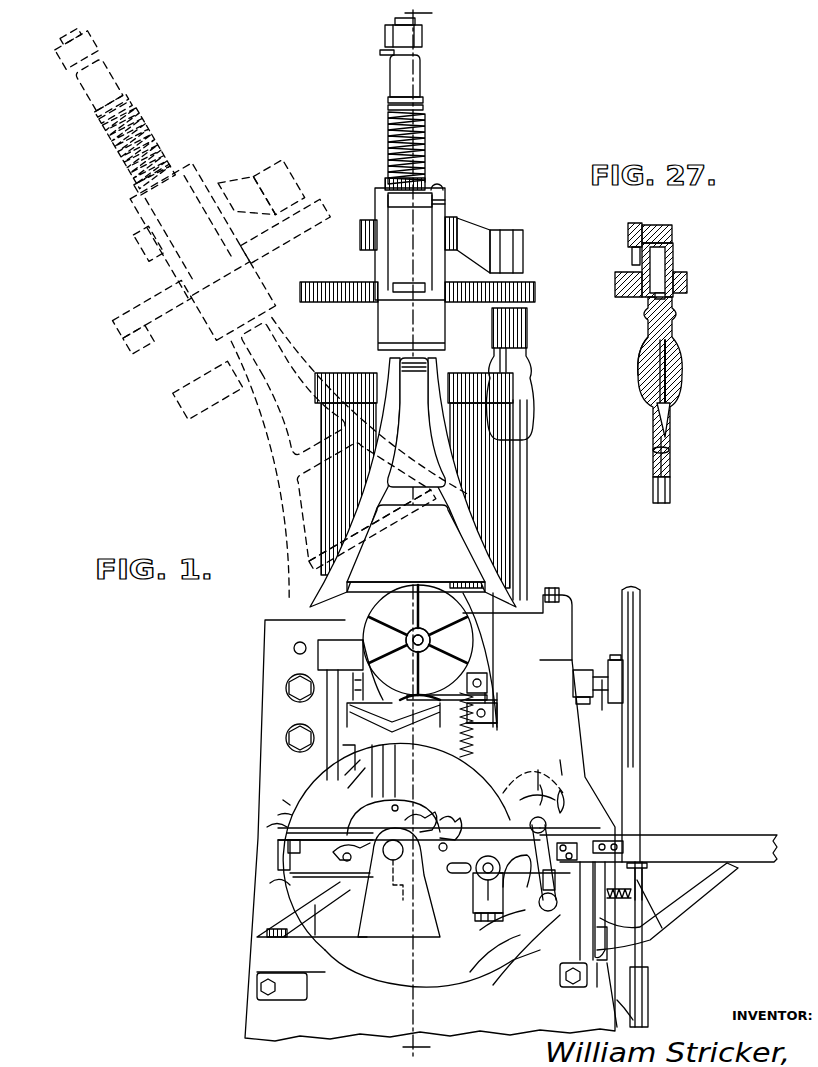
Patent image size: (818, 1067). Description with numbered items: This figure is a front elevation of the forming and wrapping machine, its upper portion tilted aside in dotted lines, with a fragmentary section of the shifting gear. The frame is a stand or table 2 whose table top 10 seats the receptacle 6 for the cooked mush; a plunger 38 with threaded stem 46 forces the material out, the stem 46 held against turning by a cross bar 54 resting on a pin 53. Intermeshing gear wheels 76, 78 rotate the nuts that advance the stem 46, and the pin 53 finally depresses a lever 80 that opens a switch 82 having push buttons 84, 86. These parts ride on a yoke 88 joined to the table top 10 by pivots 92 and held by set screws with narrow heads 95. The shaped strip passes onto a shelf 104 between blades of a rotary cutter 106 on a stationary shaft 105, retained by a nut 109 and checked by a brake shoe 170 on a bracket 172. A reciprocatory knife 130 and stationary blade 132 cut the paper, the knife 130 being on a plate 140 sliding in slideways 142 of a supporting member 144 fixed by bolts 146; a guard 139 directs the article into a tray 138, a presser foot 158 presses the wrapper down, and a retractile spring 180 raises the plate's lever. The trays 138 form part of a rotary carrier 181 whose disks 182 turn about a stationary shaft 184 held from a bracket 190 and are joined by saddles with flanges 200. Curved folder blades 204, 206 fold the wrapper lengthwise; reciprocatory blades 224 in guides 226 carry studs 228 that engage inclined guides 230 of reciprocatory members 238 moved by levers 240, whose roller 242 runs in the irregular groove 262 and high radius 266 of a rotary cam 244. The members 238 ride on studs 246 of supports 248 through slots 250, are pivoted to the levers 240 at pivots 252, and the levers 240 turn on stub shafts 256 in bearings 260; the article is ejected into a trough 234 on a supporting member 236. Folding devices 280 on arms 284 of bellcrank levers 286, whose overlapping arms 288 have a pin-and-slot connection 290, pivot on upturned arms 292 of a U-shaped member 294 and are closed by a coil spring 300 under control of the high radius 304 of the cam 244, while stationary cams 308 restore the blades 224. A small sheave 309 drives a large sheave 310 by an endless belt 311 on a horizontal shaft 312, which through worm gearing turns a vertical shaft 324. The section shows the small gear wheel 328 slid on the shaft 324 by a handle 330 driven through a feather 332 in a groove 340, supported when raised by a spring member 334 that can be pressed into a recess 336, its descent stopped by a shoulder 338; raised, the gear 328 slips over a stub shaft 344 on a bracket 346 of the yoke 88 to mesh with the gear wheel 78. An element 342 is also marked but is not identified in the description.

In FIG. 1, the stand or table 2 is at (228, 773).
In FIG. 1, the receptacle 6 is at (330, 503).
In FIG. 1, the table top 10 is at (270, 650).
In FIG. 1, the plunger 38 is at (170, 378).
In FIG. 1, the stem 46 is at (388, 124).
In FIG. 1, the pin 53 is at (382, 53).
In FIG. 1, the cross bar 54 is at (383, 36).
In FIG. 1, the gear wheel 76 is at (318, 248).
In FIG. 27, the gear wheel 78 is at (630, 297).
In FIG. 1, the lever 80 is at (388, 180).
In FIG. 1, the switch 82 is at (388, 214).
In FIG. 1, the push button 84 is at (446, 201).
In FIG. 1, the push button 86 is at (443, 190).
In FIG. 1, the yoke 88 is at (386, 357).
In FIG. 1, the pivots 92 is at (295, 652).
In FIG. 1, the narrow heads 95 is at (560, 590).
In FIG. 1, the shelf 104 is at (500, 695).
In FIG. 1, the stationary shaft 105 is at (410, 630).
In FIG. 1, the rotary cutter 106 is at (400, 635).
In FIG. 1, the nut 109 is at (445, 640).
In FIG. 1, the reciprocatory knife 130 is at (340, 714).
In FIG. 1, the stationary blade 132 is at (290, 737).
In FIG. 1, the tray 138 is at (360, 745).
In FIG. 1, the guard 139 is at (340, 655).
In FIG. 1, the plate 140 is at (347, 758).
In FIG. 1, the vertical slideways 142 is at (337, 742).
In FIG. 1, the supporting member 144 is at (415, 745).
In FIG. 1, the bolts 146 is at (287, 690).
In FIG. 1, the presser foot 158 is at (408, 655).
In FIG. 1, the resilient brake shoe 170 is at (493, 672).
In FIG. 1, the bracket 172 is at (490, 727).
In FIG. 1, the retractile spring 180 is at (470, 750).
In FIG. 1, the rotary carrier 181 is at (284, 800).
In FIG. 1, the disks 182 is at (285, 815).
In FIG. 1, the stationary shaft 184 is at (399, 882).
In FIG. 1, the bracket 190 is at (414, 957).
In FIG. 1, the flanges 200 is at (285, 840).
In FIG. 1, the curved folder blade 204 is at (272, 884).
In FIG. 1, the curved folder blade 206 is at (270, 826).
In FIG. 1, the reciprocatory blades 224 is at (278, 858).
In FIG. 1, the guides 226 is at (315, 885).
In FIG. 1, the studs 228 is at (346, 853).
In FIG. 1, the inclined guides 230 is at (420, 815).
In FIG. 1, the trough 234 is at (743, 840).
In FIG. 1, the supporting member 236 is at (693, 900).
In FIG. 1, the reciprocatory members 238 is at (463, 850).
In FIG. 1, the levers 240 is at (545, 912).
In FIG. 1, the antifriction roller 242 is at (551, 912).
In FIG. 1, the rotary cam 244 is at (572, 828).
In FIG. 1, the studs 246 is at (495, 888).
In FIG. 1, the supports 248 is at (495, 925).
In FIG. 1, the longitudinal slots 250 is at (462, 874).
In FIG. 1, the pivots 252 is at (533, 786).
In FIG. 1, the stub shafts 256 is at (502, 975).
In FIG. 1, the bearings 260 is at (562, 900).
In FIG. 1, the irregular groove 262 is at (557, 740).
In FIG. 1, the high radius 266 is at (545, 790).
In FIG. 1, the folding devices 280 is at (568, 810).
In FIG. 1, the forwardly projecting arms 284 is at (576, 832).
In FIG. 1, the bellcrank levers 286 is at (633, 846).
In FIG. 1, the overlapping arms 288 is at (648, 868).
In FIG. 1, the pin-and-slot connection 290 is at (618, 899).
In FIG. 1, the upturned arms 292 is at (608, 945).
In FIG. 1, the U-shaped member 294 is at (593, 995).
In FIG. 1, the coil spring 300 is at (657, 926).
In FIG. 1, the high radius 304 is at (561, 760).
In FIG. 1, the stationary cams 308 is at (360, 815).
In FIG. 1, the small sheave 309 is at (650, 992).
In FIG. 1, the large sheave 310 is at (642, 604).
In FIG. 1, the endless belt 311 is at (643, 774).
In FIG. 1, the horizontal shaft 312 is at (601, 710).
In FIG. 1, the vertical shaft 324 is at (535, 293).
In FIG. 27, the vertical shaft 324 is at (672, 492).
In FIG. 1, the small gear wheel 328 is at (528, 318).
In FIG. 27, the small gear wheel 328 is at (676, 272).
In FIG. 1, the handle 330 is at (536, 409).
In FIG. 27, the handle 330 is at (684, 362).
In FIG. 27, the feather 332 is at (675, 392).
In FIG. 27, the spring member 334 is at (672, 427).
In FIG. 27, the recess 336 is at (660, 410).
In FIG. 27, the shoulder 338 is at (675, 340).
In FIG. 27, the groove 340 is at (676, 375).
In FIG. 27, the chamber 342 is at (668, 296).
In FIG. 27, the stub shaft 344 is at (675, 238).
In FIG. 1, the bracket 346 is at (524, 232).
In FIG. 27, the bracket 346 is at (627, 232).